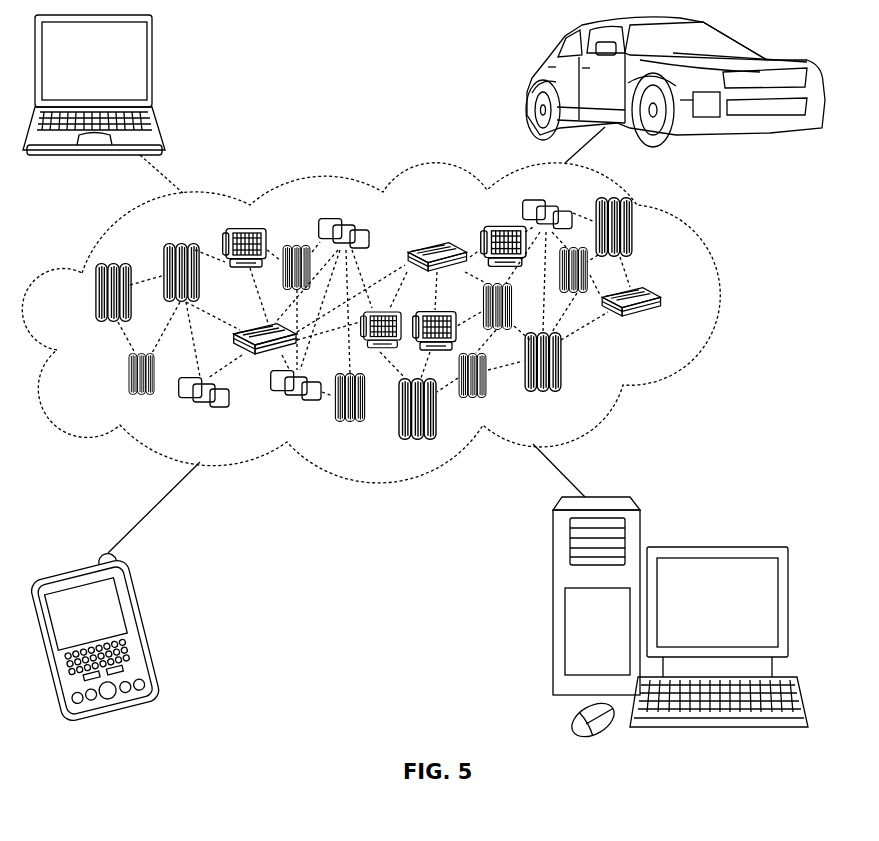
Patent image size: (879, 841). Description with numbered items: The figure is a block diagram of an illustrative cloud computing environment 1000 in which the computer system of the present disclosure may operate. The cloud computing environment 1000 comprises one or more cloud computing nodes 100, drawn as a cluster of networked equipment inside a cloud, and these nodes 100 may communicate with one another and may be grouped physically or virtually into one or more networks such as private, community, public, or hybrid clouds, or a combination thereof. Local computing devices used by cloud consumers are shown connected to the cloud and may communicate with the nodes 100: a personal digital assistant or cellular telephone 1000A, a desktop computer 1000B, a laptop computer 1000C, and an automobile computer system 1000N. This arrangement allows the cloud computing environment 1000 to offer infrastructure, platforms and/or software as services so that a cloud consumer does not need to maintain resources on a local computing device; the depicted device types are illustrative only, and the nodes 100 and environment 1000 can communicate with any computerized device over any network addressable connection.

The cloud computing environment 1000 is at (403, 340).
The cloud computing node 100 is at (670, 330).
The personal digital assistant (PDA) or cellular telephone 1000A is at (147, 627).
The desktop computer 1000B is at (715, 547).
The laptop computer 1000C is at (155, 67).
The automobile computer system 1000N is at (527, 82).